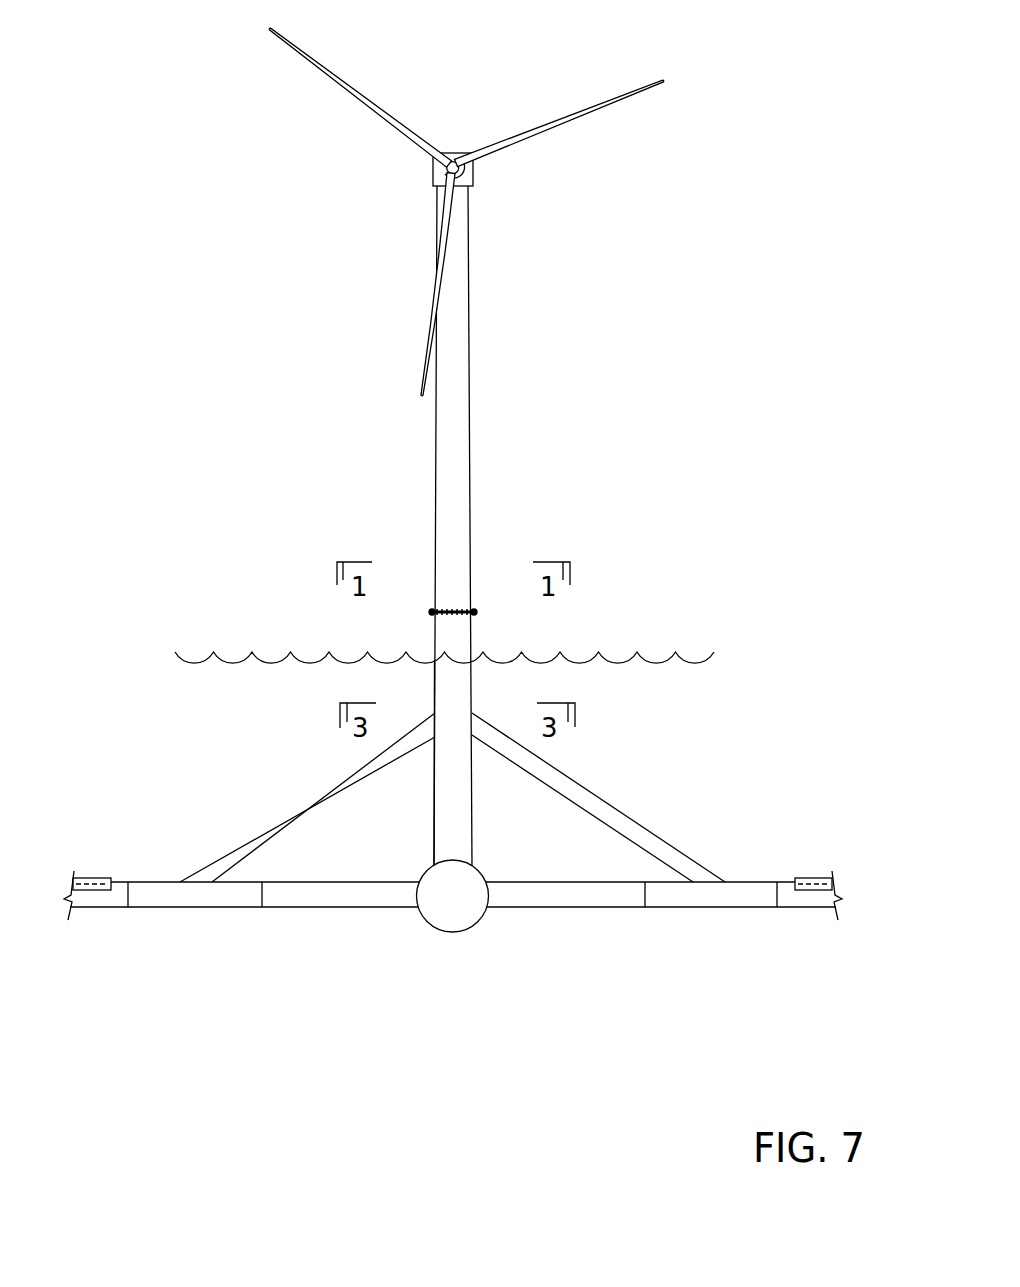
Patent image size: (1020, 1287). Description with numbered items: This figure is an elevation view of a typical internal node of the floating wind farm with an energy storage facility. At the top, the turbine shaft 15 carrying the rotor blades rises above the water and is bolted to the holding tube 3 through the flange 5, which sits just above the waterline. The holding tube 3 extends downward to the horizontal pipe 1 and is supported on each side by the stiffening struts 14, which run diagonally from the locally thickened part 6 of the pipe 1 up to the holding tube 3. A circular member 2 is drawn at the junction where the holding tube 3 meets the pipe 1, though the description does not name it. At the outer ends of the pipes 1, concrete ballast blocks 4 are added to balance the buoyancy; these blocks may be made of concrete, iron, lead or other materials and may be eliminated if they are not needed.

The pipe 1 is at (241, 928).
The central buoyancy body 2 is at (487, 943).
The holding tube 3 is at (472, 694).
The concrete ballast block 4 is at (824, 838).
The flange 5 is at (497, 533).
The locally thickened part 6 is at (664, 929).
The stiffening strut 14 is at (562, 772).
The turbine shaft 15 is at (468, 308).